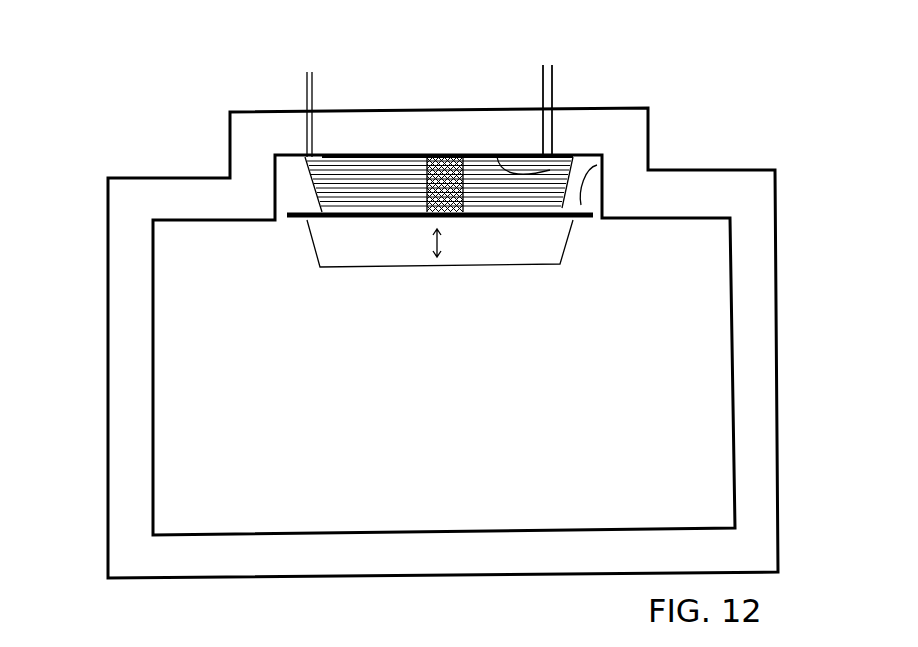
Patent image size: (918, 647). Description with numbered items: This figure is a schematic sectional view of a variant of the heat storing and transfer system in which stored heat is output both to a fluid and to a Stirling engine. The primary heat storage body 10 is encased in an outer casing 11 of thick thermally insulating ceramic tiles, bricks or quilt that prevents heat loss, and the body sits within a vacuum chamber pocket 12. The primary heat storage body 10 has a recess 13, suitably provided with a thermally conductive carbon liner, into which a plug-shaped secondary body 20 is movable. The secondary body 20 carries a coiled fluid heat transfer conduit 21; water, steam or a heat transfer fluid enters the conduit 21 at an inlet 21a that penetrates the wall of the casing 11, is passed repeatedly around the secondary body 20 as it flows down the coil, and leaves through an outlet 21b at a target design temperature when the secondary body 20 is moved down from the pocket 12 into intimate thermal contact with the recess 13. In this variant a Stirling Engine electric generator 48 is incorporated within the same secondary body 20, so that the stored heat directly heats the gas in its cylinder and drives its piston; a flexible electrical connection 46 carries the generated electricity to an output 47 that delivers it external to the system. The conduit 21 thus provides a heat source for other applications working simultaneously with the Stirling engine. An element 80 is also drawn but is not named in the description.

The primary heat storage body 10 is at (336, 406).
The outer casing 11 is at (767, 359).
The pocket 12 is at (292, 190).
The recess 13 is at (570, 256).
The secondary body 20 is at (402, 157).
The conduit 21 is at (350, 157).
The inlet 21a is at (301, 91).
The outlet 21b is at (557, 90).
The output 47 is at (547, 111).
The flexible electrical connection 46 is at (543, 2).
The Stirling Engine electric generator 48 is at (447, 157).
The edge element 80 is at (597, 165).